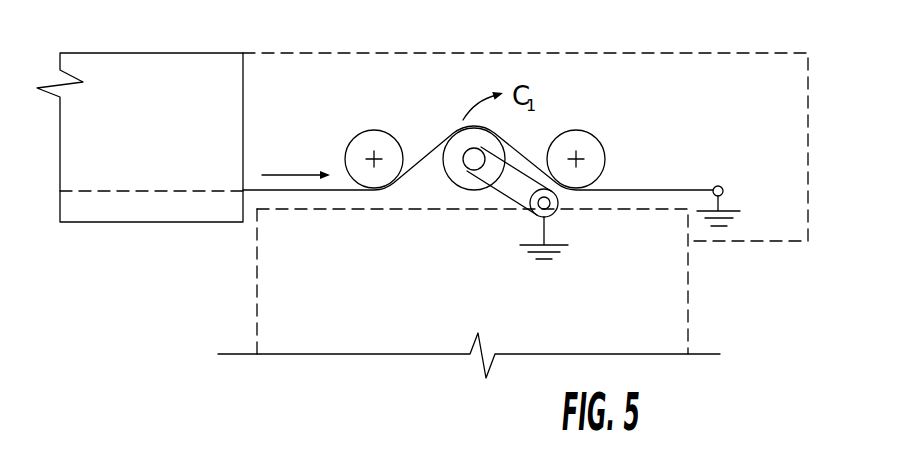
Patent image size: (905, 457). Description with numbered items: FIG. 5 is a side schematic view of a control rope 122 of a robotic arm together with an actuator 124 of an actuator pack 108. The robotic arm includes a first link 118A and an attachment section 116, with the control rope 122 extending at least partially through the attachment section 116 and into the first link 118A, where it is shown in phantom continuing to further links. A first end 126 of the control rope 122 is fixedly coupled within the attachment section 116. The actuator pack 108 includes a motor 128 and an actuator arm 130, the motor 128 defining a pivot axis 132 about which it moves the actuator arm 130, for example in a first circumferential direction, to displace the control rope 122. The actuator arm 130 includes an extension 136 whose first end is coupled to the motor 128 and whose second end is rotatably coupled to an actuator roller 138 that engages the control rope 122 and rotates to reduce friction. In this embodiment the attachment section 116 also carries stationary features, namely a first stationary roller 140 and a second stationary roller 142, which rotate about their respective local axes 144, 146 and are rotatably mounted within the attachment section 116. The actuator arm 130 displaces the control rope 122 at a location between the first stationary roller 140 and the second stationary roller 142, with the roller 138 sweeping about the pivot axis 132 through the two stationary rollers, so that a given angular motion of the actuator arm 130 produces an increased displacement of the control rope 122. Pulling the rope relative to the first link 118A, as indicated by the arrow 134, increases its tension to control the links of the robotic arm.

The actuator pack 108 is at (670, 320).
The attachment section 116 is at (678, 65).
The first link 118A is at (156, 70).
The control rope 122 is at (677, 191).
The actuator 124 is at (473, 268).
The first end 126 is at (723, 176).
The motor 128 is at (553, 216).
The actuator arm 130 is at (475, 215).
The pivot axis 132 is at (558, 203).
The arrow 134 is at (298, 175).
The extension 136 is at (500, 188).
The actuator roller 138 is at (455, 182).
The first stationary roller 140 is at (362, 137).
The second stationary roller 142 is at (597, 148).
The local axis 144 is at (378, 156).
The local axis 146 is at (578, 160).